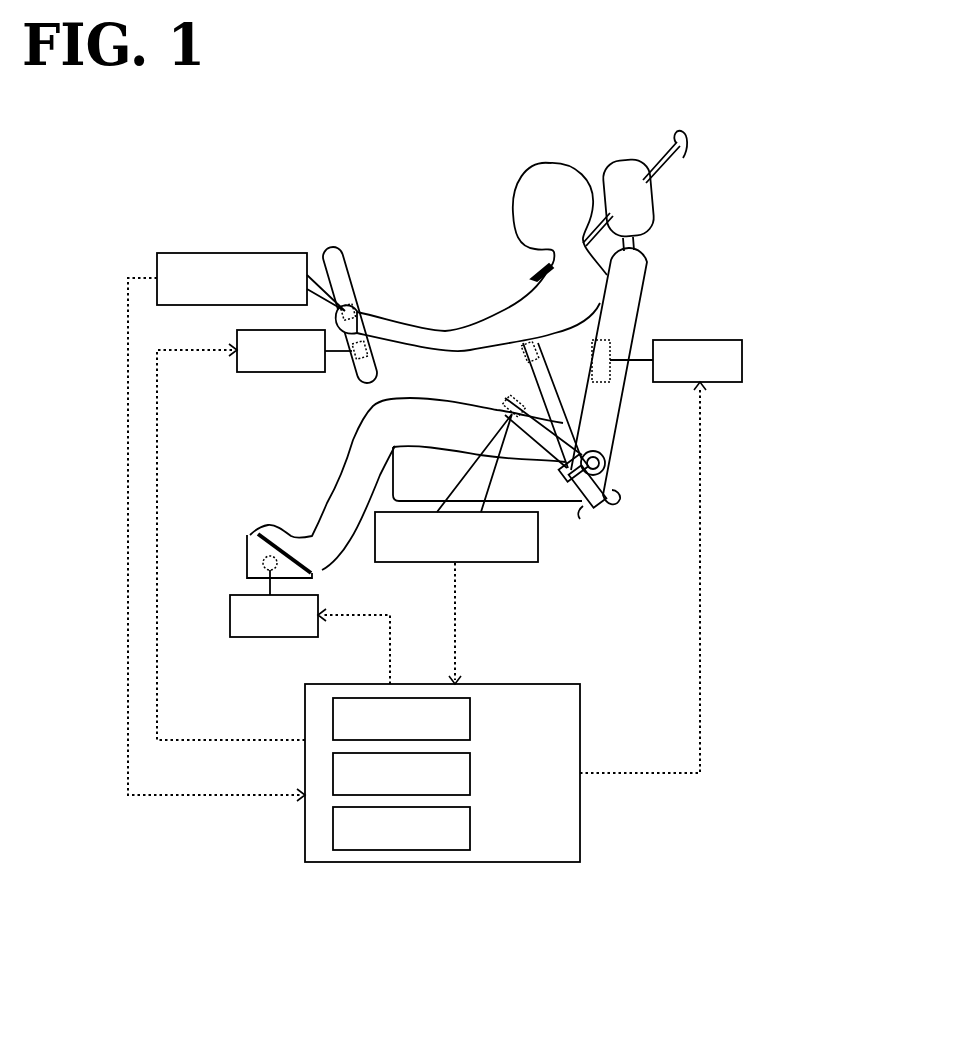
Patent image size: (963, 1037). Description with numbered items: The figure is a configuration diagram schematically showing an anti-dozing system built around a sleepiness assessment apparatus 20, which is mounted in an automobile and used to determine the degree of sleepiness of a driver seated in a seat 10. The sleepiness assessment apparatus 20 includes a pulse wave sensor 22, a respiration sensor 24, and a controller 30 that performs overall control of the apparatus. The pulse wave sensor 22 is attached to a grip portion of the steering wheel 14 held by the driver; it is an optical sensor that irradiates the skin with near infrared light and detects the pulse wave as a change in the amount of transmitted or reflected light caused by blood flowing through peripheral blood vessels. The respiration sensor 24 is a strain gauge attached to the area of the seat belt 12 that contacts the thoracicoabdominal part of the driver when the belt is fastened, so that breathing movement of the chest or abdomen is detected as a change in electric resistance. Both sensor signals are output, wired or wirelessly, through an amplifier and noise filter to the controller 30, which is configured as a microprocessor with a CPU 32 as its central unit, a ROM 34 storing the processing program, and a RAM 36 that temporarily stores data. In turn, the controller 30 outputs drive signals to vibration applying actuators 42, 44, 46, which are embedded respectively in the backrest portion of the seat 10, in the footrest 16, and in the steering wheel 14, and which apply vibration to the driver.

The seat 10 is at (636, 292).
The seat belt 12 is at (550, 420).
The steering wheel 14 is at (350, 278).
The footrest 16 is at (247, 534).
The sleepiness assessment apparatus 20 is at (468, 350).
The pulse wave sensor 22 is at (234, 253).
The respiration sensor 24 is at (522, 350).
The controller 30 is at (486, 773).
The CPU 32 is at (471, 718).
The ROM 34 is at (471, 773).
The RAM 36 is at (471, 828).
The vibration applying actuator 42 is at (742, 358).
The vibration applying actuator 44 is at (273, 638).
The vibration applying actuator 46 is at (280, 373).